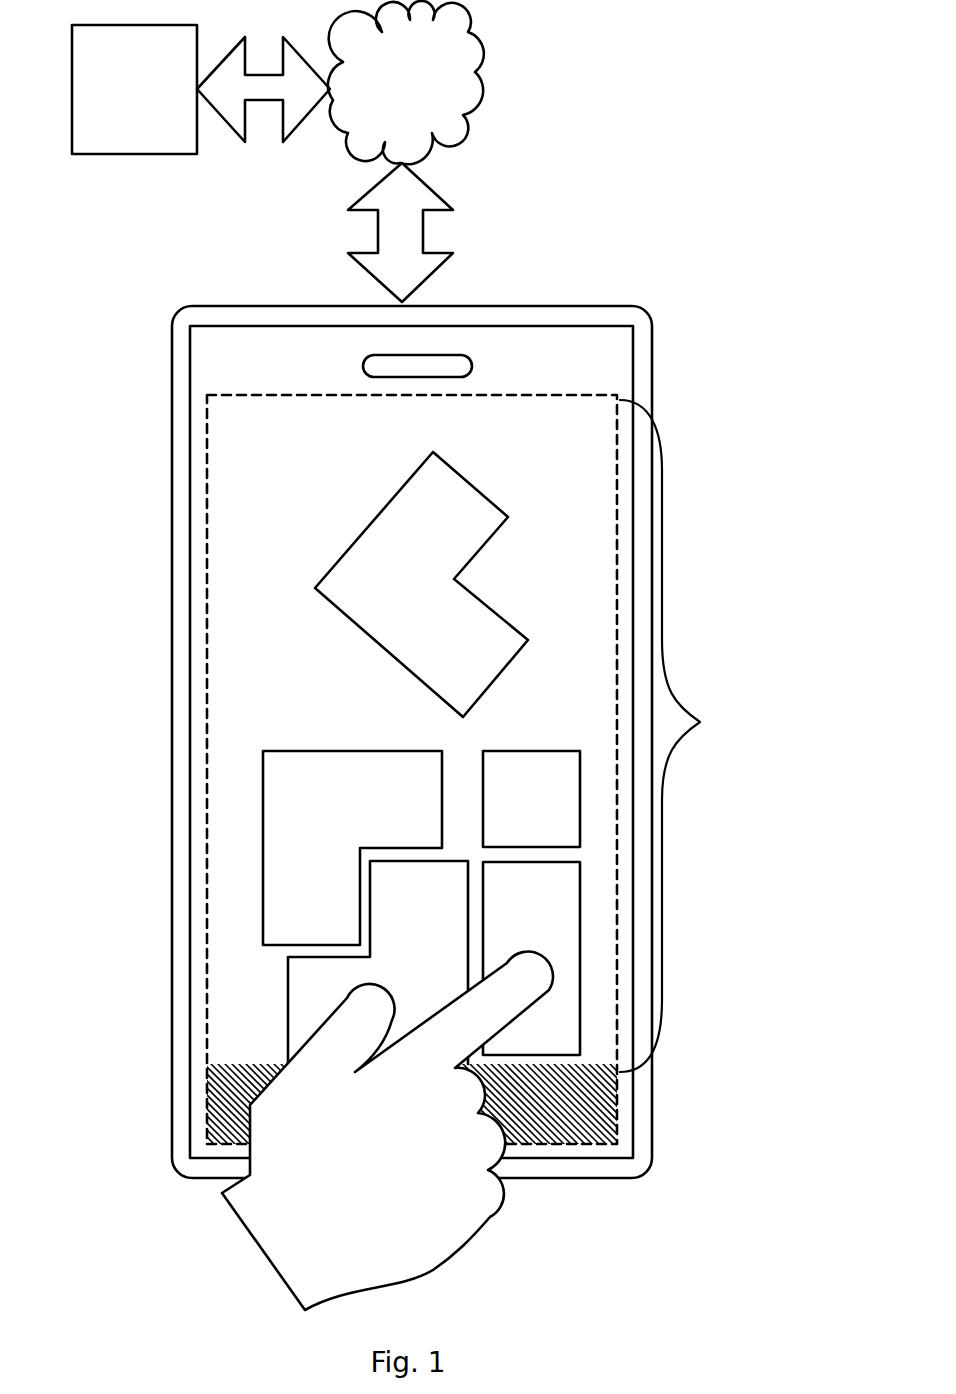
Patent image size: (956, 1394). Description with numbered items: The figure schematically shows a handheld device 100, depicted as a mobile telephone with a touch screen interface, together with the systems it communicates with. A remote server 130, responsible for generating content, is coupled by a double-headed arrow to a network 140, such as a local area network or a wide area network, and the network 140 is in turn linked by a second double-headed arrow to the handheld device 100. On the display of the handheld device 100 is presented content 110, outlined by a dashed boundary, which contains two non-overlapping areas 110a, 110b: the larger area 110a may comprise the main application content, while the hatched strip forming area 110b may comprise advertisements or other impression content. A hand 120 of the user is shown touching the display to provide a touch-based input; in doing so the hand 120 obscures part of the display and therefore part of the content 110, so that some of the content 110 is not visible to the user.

The handheld device 100 is at (156, 324).
The content 110 is at (208, 492).
The area 110a is at (713, 717).
The area 110b is at (212, 1080).
The hand 120 is at (423, 1257).
The remote server 130 is at (109, 106).
The network 140 is at (375, 101).